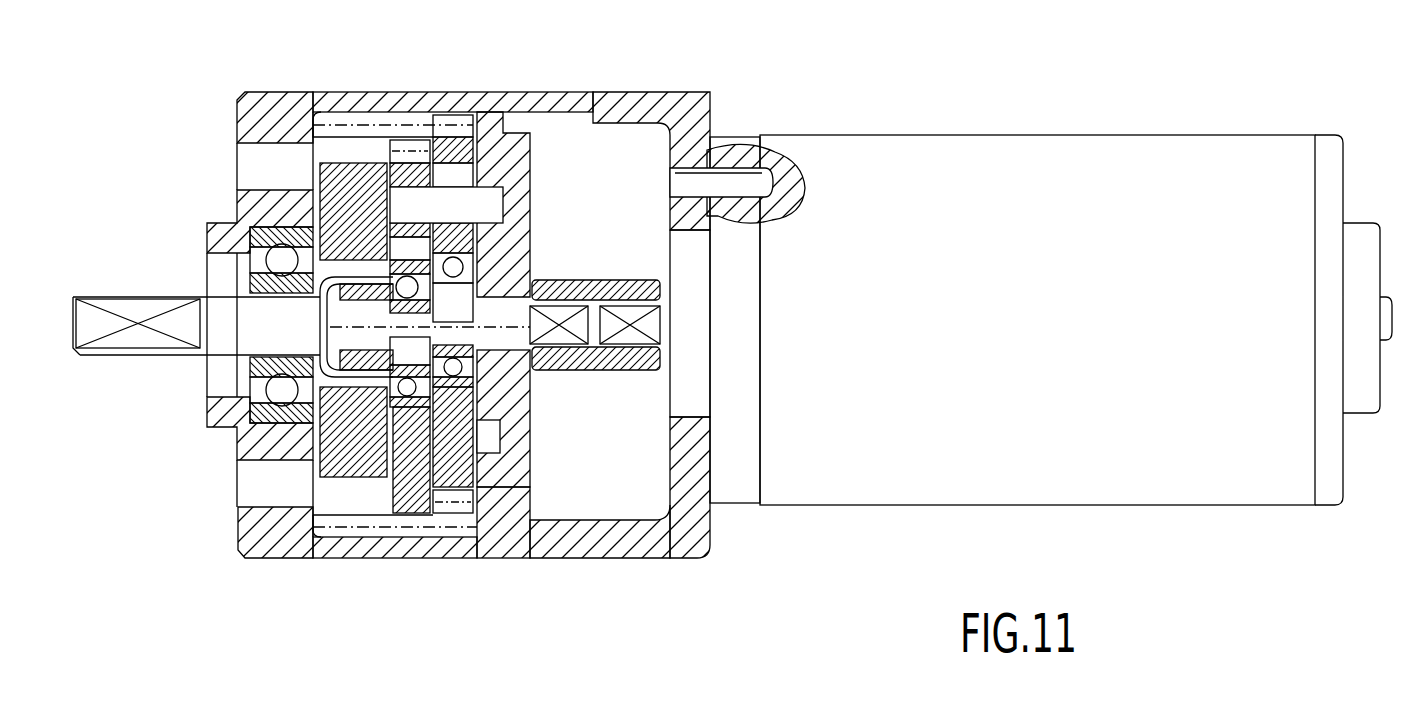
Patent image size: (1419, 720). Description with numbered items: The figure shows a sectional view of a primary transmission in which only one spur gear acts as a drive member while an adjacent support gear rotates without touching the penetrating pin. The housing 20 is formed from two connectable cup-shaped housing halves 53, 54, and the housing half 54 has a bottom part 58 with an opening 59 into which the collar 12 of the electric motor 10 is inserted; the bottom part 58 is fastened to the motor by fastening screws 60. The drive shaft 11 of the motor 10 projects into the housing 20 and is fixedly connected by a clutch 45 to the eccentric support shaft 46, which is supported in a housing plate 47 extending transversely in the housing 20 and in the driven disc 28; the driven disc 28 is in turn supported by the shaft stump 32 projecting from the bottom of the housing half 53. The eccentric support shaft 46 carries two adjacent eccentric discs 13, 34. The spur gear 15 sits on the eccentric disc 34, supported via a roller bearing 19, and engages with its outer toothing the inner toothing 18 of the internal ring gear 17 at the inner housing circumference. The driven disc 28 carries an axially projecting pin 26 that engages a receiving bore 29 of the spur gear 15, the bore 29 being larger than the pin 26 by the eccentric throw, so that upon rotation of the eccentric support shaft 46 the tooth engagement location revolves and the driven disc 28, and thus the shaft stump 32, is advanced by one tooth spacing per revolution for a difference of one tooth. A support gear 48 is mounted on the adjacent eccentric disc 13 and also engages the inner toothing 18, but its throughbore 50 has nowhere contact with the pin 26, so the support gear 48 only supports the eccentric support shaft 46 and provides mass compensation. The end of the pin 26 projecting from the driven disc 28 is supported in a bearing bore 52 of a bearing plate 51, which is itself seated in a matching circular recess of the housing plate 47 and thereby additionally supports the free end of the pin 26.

The electric motor 10 is at (927, 167).
The drive shaft 11 is at (628, 332).
The collar 12 is at (697, 298).
The eccentric disc 13 is at (463, 313).
The spur gear 15 is at (407, 505).
The internal ring gear 17 is at (343, 137).
The inner toothing 18 is at (363, 118).
The roller bearing 19 is at (470, 255).
The housing 20 is at (293, 563).
The pin 26 is at (487, 207).
The driven disc 28 is at (345, 462).
The receiving bore 29 is at (412, 247).
The shaft stump 32 is at (138, 300).
The eccentric disc 34 is at (416, 364).
The clutch 45 is at (586, 283).
The eccentric support shaft 46 is at (367, 327).
The housing plate 47 is at (497, 525).
The support gear 48 is at (453, 470).
The throughbore 50 is at (455, 178).
The bearing plate 51 is at (494, 168).
The bearing bore 52 is at (513, 433).
The housing half 53 is at (400, 105).
The housing half 54 is at (623, 540).
The bottom part 58 is at (700, 470).
The opening 59 is at (697, 417).
The fastening screw 60 is at (733, 183).